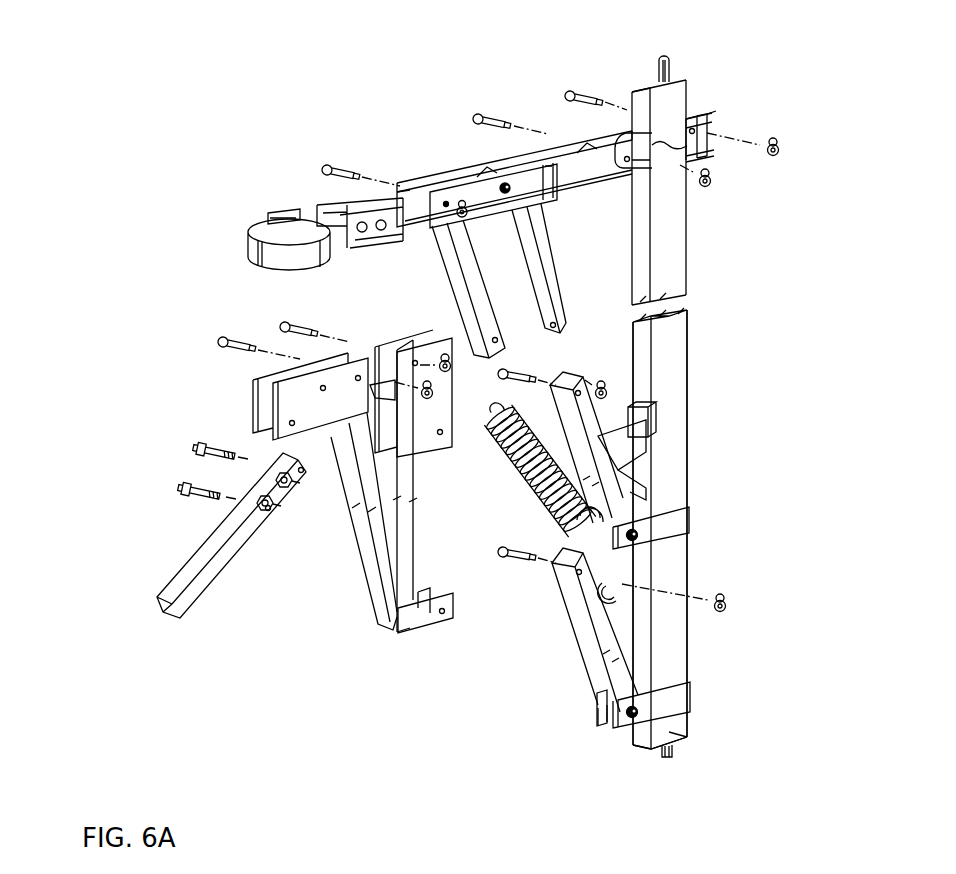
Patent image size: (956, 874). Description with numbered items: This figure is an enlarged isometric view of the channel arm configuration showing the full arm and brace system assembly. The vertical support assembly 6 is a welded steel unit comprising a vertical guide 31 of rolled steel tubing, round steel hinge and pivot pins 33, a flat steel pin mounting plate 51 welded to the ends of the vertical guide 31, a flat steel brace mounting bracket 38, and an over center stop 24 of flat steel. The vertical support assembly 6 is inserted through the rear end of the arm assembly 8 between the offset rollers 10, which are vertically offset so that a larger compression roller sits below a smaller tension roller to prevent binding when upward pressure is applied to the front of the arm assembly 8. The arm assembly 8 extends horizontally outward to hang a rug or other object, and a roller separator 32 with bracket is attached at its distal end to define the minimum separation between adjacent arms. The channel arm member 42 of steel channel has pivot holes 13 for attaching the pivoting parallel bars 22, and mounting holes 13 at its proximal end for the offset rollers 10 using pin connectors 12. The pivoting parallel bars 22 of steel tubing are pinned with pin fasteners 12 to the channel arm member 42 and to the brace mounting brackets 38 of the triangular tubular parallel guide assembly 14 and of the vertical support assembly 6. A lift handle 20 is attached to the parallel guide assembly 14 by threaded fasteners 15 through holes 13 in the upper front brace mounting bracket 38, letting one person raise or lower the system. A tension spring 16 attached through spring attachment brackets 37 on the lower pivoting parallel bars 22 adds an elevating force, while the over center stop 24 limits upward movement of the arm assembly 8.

The vertical support assembly 6 is at (720, 371).
The arm assembly 8 is at (430, 133).
The offset rollers 10 is at (697, 115).
The pin connectors 12 is at (565, 93).
The pivot holes 13 is at (440, 430).
The parallel guide assembly 14 is at (340, 585).
The threaded fasteners 15 is at (170, 483).
The tension spring 16 is at (510, 471).
The lift handle 20 is at (212, 543).
The pivoting parallel bars 22 is at (462, 298).
The over center stop 24 is at (638, 420).
The vertical guide 31 is at (673, 380).
The roller separator 32 is at (268, 212).
The hinge and pivot pins 33 is at (662, 57).
The spring attachment brackets 37 is at (590, 517).
The brace mounting bracket 38 is at (407, 350).
The channel arm member 42 is at (410, 189).
The pin mounting plate 51 is at (643, 81).